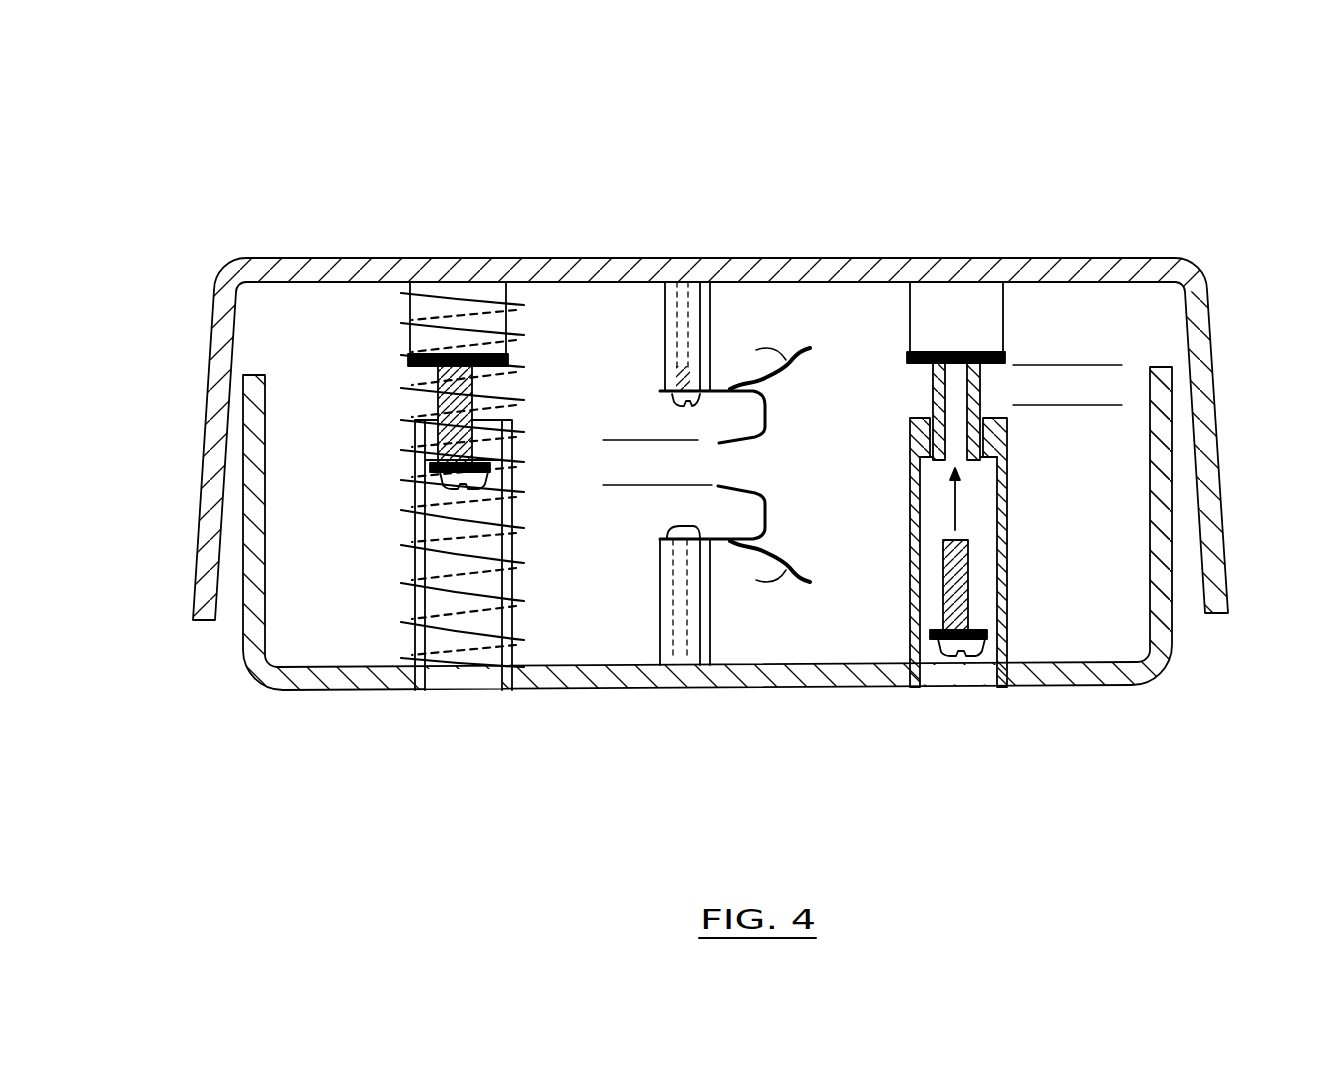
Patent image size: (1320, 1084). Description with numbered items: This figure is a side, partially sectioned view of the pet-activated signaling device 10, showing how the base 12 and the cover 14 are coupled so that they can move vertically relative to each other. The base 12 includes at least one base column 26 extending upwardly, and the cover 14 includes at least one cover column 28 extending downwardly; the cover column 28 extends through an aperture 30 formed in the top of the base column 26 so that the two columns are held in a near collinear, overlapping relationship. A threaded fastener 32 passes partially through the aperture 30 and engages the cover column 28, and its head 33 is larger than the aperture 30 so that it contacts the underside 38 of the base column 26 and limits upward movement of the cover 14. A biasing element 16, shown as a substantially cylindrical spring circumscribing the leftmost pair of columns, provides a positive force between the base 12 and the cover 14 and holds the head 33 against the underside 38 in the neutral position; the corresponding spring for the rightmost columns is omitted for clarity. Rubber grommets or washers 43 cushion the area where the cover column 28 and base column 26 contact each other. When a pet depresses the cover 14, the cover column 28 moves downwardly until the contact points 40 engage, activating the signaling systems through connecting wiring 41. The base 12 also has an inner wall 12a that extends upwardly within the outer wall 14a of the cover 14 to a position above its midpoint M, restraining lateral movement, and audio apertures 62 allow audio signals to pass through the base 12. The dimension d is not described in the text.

The pet-activated signaling device 10 is at (186, 162).
The base 12 is at (760, 581).
The inner wall 12a is at (1172, 623).
The cover 14 is at (755, 392).
The outer wall 14a is at (1218, 468).
The biasing element 16 is at (403, 293).
The base column 26 is at (415, 602).
The cover column 28 is at (512, 395).
The aperture 30 is at (1004, 358).
The threaded fastener 32 is at (925, 586).
The head 33 is at (990, 610).
The underside 38 is at (1007, 482).
The contact points 40 is at (763, 427).
The connecting wiring 41 is at (793, 340).
The rubber grommets or washers 43 is at (993, 393).
The audio apertures 62 is at (665, 326).
The midpoint M is at (1218, 437).
The distance d is at (862, 425).